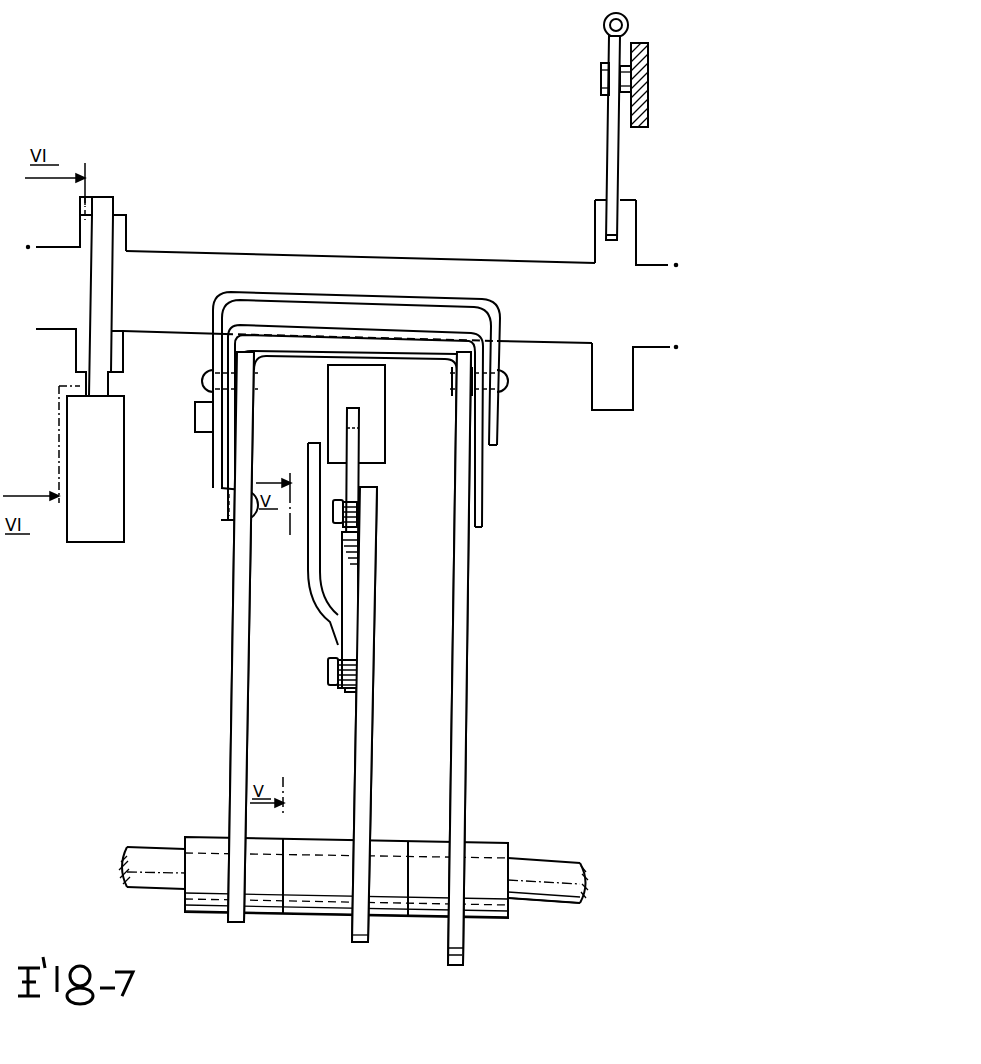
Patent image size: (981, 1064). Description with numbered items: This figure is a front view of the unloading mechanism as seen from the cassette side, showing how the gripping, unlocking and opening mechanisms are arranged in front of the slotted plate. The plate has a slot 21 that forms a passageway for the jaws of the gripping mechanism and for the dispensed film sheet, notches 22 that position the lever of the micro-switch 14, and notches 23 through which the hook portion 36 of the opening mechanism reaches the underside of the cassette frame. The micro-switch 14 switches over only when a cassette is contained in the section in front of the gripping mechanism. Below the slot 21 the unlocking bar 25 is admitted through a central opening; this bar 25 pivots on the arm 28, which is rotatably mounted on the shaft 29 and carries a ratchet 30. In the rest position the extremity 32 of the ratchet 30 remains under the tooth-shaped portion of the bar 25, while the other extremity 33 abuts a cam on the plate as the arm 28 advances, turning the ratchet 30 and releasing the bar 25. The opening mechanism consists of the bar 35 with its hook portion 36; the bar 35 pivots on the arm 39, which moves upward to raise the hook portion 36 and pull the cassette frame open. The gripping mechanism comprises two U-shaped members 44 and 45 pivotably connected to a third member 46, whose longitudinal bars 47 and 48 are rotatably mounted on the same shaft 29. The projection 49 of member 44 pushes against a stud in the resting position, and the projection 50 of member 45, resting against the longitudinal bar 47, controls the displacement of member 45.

The micro-switch K14 14 is at (81, 535).
The slot 21 is at (542, 327).
The notches 22 is at (118, 236).
The notches 23 is at (630, 253).
The unlocking bar 25 is at (355, 483).
The arm 28 is at (372, 588).
The shaft 29 is at (523, 866).
The ratchet 30 is at (340, 647).
The extremity of the ratchet 32 is at (345, 549).
The extremity of the ratchet 33 is at (313, 480).
The bar 35 is at (621, 158).
The hook portion 36 is at (618, 228).
The arm 39 is at (650, 96).
The U-shaped member 44 is at (497, 433).
The U-shaped member 45 is at (481, 509).
The third member 46 is at (407, 350).
The longitudinal bar 47 is at (231, 780).
The longitudinal bar 48 is at (460, 788).
The projection 49 is at (205, 420).
The projection 50 is at (226, 513).